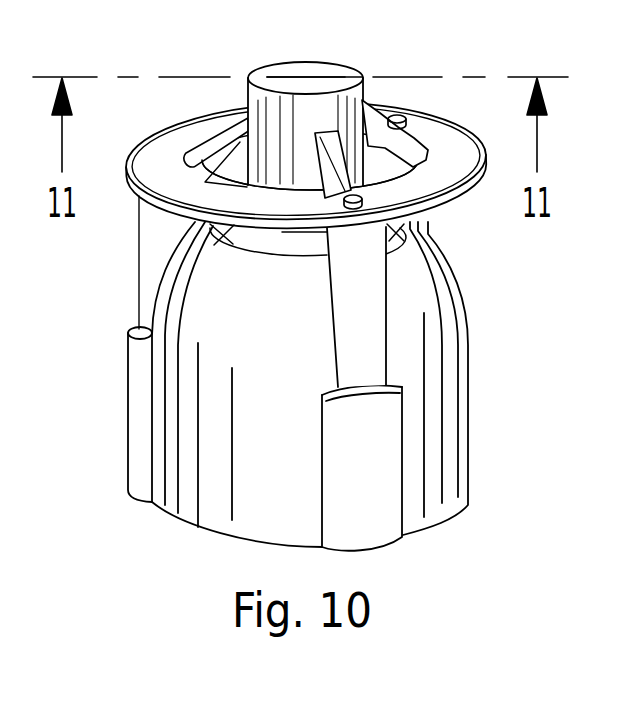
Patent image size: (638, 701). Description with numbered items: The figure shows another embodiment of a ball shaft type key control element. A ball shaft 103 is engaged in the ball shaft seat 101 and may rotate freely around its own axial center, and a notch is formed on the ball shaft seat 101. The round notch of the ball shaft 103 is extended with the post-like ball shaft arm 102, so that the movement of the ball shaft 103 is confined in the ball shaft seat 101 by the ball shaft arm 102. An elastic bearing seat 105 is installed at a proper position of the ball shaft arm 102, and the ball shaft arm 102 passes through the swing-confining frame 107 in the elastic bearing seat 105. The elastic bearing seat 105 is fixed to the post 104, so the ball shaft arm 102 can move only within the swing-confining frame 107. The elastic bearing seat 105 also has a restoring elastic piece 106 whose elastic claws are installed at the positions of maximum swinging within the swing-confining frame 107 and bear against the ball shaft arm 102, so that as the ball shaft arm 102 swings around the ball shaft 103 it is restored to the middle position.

The ball shaft seat 101 is at (438, 422).
The ball shaft arm 102 is at (300, 73).
The ball shaft 103 is at (243, 243).
The post 104 is at (372, 352).
The elastic bearing seat 105 is at (155, 201).
The restoring elastic piece 106 is at (407, 140).
The swing-confining frame 107 is at (405, 158).